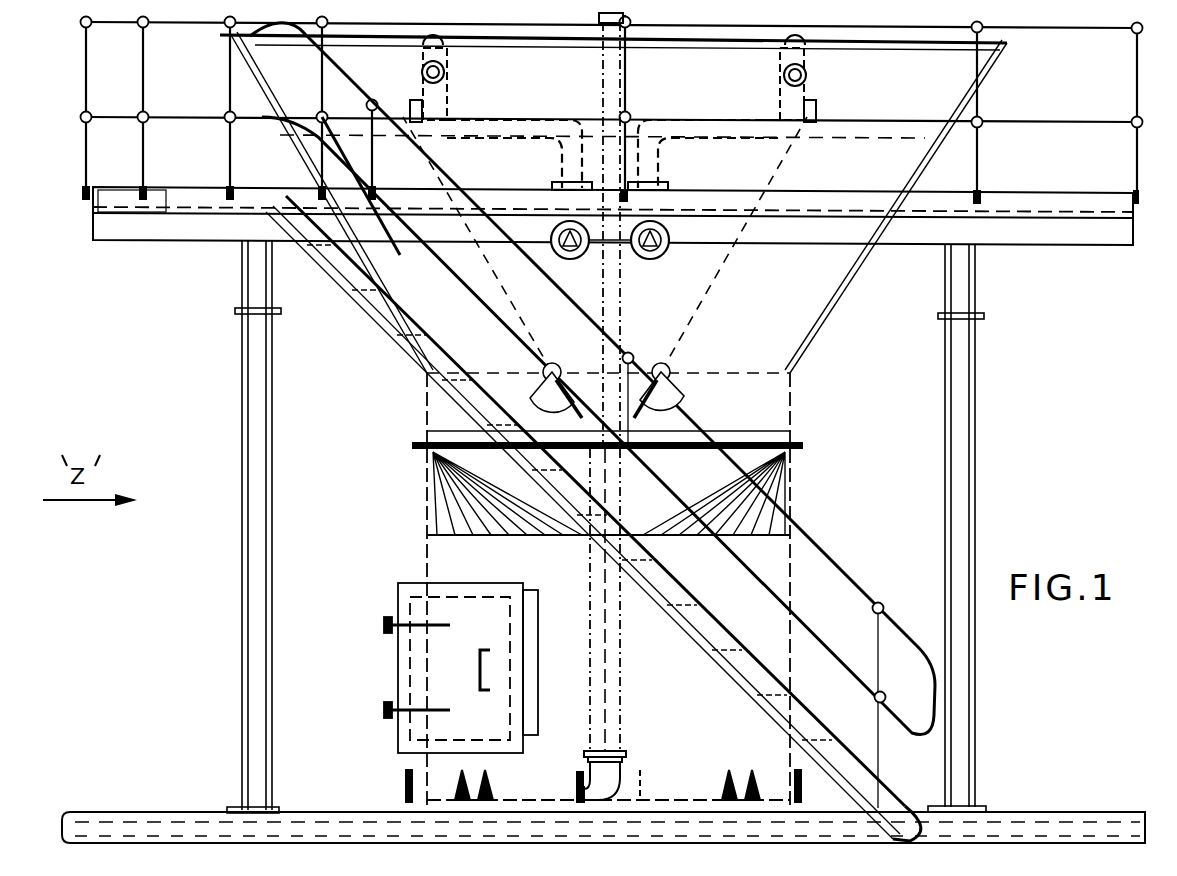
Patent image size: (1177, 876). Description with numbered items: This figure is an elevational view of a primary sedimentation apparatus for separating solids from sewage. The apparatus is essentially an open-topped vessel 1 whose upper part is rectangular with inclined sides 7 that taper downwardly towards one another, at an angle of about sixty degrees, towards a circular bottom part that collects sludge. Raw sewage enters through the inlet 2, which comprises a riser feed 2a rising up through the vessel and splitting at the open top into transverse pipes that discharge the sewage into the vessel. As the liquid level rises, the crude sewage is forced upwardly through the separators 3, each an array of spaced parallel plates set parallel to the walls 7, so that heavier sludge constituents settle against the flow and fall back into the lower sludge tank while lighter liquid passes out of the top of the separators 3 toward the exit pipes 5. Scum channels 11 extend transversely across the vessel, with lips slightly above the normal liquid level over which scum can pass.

The vessel 1 is at (1006, 361).
The inlet 2 is at (612, 724).
The riser feed 2a is at (609, 670).
The separator 3 is at (613, 411).
The exit pipe 5 is at (489, 110).
The inclined side wall 7 is at (375, 328).
The scum channel 11 is at (420, 100).